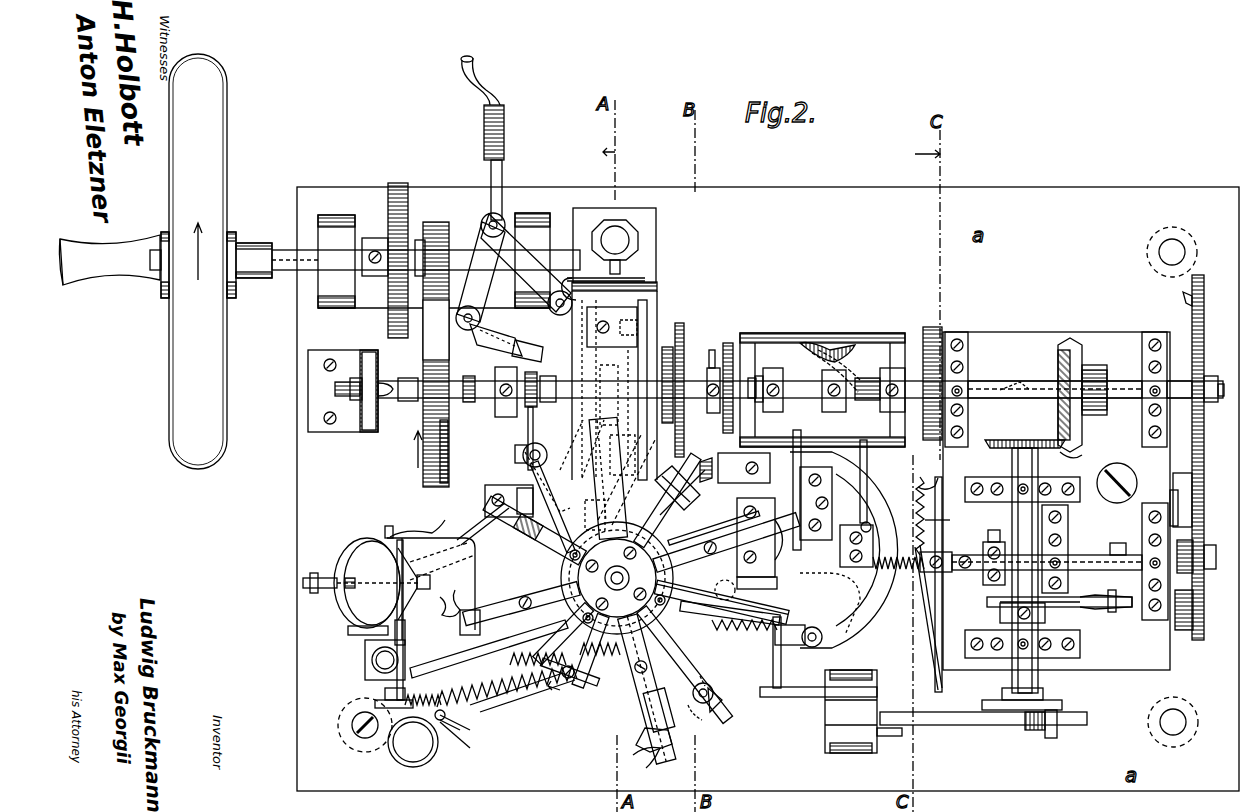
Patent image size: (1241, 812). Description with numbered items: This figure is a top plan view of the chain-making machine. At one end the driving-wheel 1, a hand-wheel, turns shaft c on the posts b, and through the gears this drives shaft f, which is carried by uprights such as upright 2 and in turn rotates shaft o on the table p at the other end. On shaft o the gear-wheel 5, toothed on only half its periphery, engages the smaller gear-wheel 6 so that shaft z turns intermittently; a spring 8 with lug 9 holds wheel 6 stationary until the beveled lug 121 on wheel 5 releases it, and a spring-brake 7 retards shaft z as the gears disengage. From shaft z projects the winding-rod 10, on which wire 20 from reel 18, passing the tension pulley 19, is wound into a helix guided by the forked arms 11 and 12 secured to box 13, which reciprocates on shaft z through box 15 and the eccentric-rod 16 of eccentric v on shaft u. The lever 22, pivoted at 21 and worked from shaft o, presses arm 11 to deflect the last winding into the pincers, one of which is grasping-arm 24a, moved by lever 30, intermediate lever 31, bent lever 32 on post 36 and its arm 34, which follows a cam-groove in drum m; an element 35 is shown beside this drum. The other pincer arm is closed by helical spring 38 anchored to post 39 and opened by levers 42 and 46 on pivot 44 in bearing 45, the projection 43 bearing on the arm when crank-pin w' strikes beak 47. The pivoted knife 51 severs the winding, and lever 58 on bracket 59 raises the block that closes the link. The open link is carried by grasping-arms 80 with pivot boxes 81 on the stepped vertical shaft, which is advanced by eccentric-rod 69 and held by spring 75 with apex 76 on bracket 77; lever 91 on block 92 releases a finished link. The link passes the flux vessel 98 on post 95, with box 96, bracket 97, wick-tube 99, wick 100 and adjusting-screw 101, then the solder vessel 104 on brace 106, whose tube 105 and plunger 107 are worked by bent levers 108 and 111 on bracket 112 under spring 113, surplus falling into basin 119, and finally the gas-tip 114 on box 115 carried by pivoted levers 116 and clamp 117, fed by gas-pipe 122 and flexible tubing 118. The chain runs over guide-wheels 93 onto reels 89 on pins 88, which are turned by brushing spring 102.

The driving-wheel 1 is at (218, 118).
The upright 2 is at (308, 360).
The gear-wheel 5 is at (1204, 300).
The gear-wheel 6 is at (1196, 530).
The spring-brake 7 is at (1205, 608).
The spring 8 is at (1195, 490).
The lug 9 is at (1196, 505).
The winding-rod 10 is at (920, 565).
The guide-arm 11 is at (898, 523).
The guide 12 is at (965, 572).
The box 13 is at (994, 532).
The box 15 is at (1112, 584).
The eccentric-rod 16 is at (1108, 603).
The reel 18 is at (935, 690).
The pulley 19 is at (935, 620).
The wire 20 is at (935, 600).
The pivot 21 is at (875, 520).
The lever 22 is at (865, 478).
The grasping-arm 24a is at (738, 582).
The lever 30 is at (733, 632).
The intermediate lever 31 is at (808, 646).
The bent lever 32 is at (849, 552).
The arm 34 is at (799, 490).
The link 35 is at (848, 350).
The post 36 is at (760, 532).
The helical spring 38 is at (490, 712).
The post 39 is at (352, 723).
The lever 42 is at (810, 697).
The projection 43 is at (773, 665).
The pivot 44 is at (850, 700).
The bearing 45 is at (888, 728).
The lever 46 is at (960, 725).
The beak 47 is at (1030, 728).
The knife 51 is at (830, 462).
The lever 58 is at (718, 446).
The bracket 59 is at (720, 462).
The eccentric-rod 69 is at (690, 468).
The spring 75 is at (680, 490).
The apex 76 is at (631, 590).
The bracket 77 is at (618, 312).
The grasping-arm 80 is at (648, 708).
The box 81 is at (640, 738).
The pin 88 is at (565, 671).
The reel 89 is at (575, 678).
The lever 91 is at (626, 479).
The block 92 is at (586, 449).
The guide-wheel 93 is at (714, 706).
The post 95 is at (372, 660).
The box 96 is at (397, 668).
The bracket 97 is at (411, 688).
The vessel 98 is at (425, 755).
The wick-tube 99 is at (456, 723).
The wick 100 is at (479, 717).
The adjusting-screw 101 is at (468, 746).
The spring 102 is at (486, 644).
The vessel 104 is at (355, 565).
The tube 105 is at (432, 583).
The brace 106 is at (348, 632).
The plunger 107 is at (380, 540).
The bent lever 108 is at (325, 590).
The bent lever 111 is at (458, 561).
The bracket 112 is at (505, 487).
The spring 113 is at (478, 528).
The gas-tip 114 is at (534, 345).
The box 115 is at (504, 332).
The pivoted levers 116 is at (530, 258).
The clamp 117 is at (580, 265).
The flexible tubing 118 is at (493, 108).
The basin 119 is at (475, 596).
The beveled lug 121 is at (1183, 296).
The gas-pipe 122 is at (491, 180).